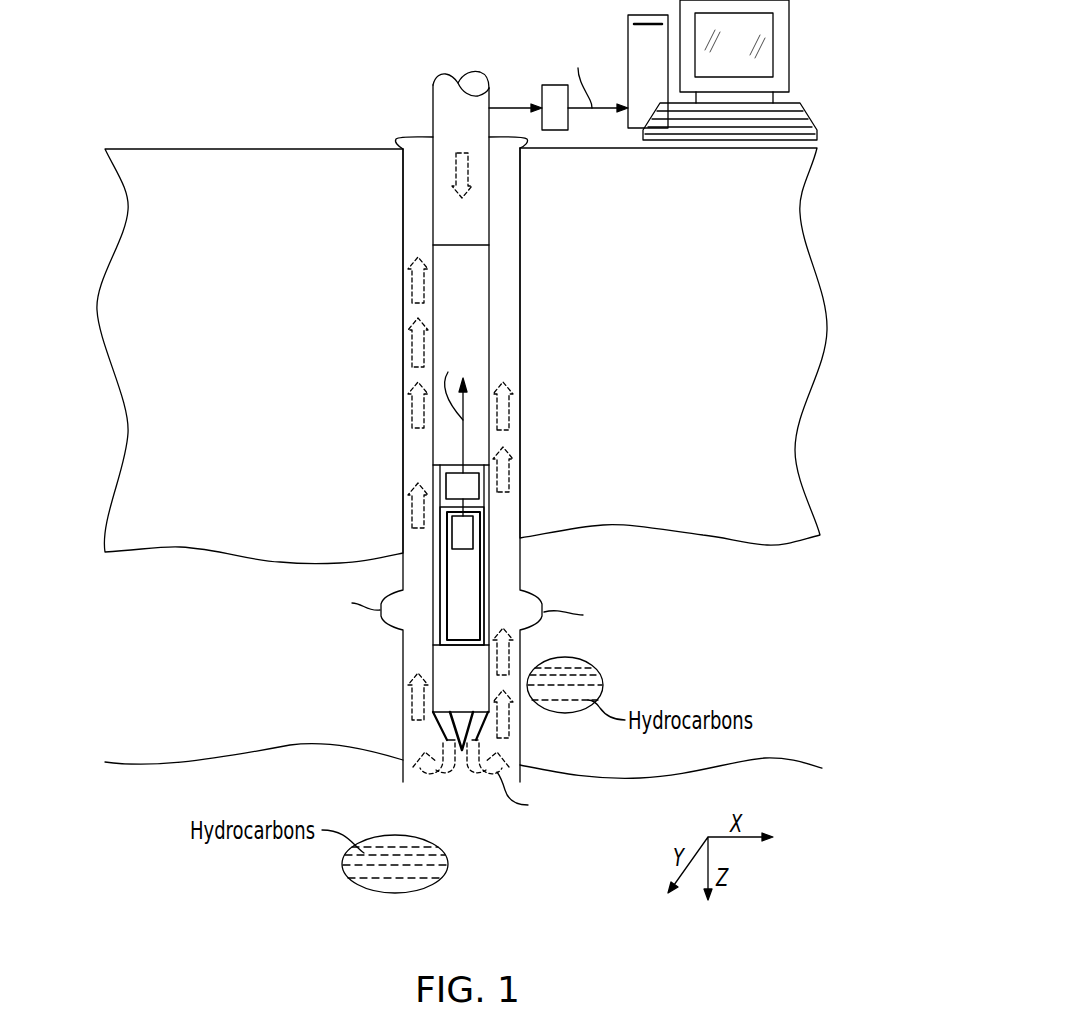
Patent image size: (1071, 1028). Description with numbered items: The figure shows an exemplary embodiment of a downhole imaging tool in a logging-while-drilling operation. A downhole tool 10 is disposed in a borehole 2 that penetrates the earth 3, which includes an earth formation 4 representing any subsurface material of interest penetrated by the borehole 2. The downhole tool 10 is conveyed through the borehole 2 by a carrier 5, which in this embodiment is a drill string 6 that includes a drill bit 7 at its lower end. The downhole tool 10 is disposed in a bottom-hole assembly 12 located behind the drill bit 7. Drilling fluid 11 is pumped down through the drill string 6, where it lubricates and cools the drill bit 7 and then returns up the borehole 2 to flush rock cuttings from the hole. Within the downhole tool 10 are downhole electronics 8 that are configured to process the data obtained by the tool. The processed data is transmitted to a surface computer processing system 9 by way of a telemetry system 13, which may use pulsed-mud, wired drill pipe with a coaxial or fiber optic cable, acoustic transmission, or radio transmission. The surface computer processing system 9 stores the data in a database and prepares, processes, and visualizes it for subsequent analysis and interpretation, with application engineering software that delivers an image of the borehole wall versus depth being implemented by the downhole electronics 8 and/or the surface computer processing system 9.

The borehole 2 is at (397, 137).
The earth 3 is at (711, 329).
The earth formation 4 is at (823, 592).
The carrier 5 is at (433, 100).
The drill string 6 is at (452, 216).
The drill bit 7 is at (460, 722).
The downhole electronics 8 is at (465, 540).
The surface computer processing system 9 is at (628, 28).
The downhole tool 10 is at (458, 557).
The drilling fluid 11 is at (510, 722).
The bottom-hole assembly 12 is at (435, 637).
The telemetry system 13 is at (447, 485).